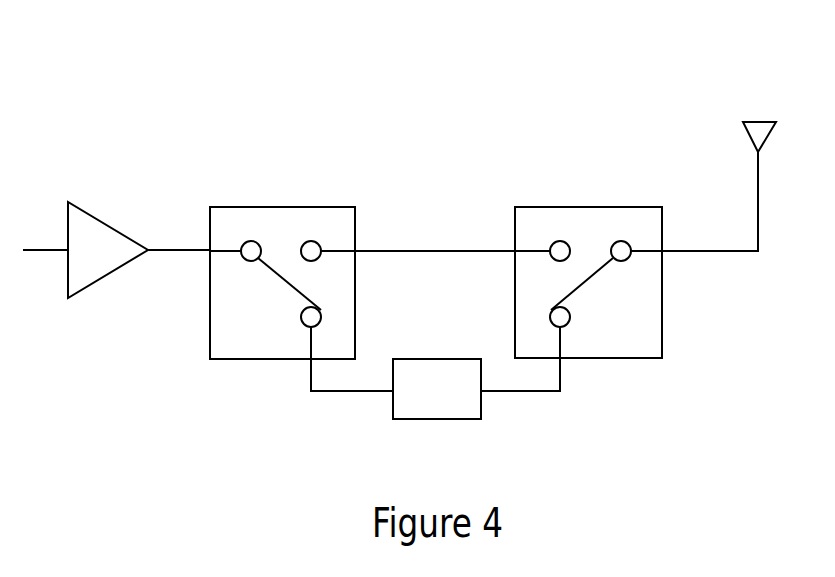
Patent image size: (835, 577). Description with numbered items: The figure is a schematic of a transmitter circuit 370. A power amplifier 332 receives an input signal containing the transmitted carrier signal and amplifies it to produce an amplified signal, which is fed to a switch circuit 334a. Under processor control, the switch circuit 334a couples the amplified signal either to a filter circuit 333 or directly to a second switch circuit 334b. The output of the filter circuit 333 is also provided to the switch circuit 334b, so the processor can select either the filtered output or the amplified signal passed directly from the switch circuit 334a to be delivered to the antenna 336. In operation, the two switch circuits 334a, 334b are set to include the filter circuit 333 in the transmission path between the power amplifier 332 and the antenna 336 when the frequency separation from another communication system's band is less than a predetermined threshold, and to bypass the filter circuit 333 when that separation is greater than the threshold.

The transmitter circuit 370 is at (470, 100).
The power amplifier 332 is at (98, 215).
The switch circuit 334a is at (283, 207).
The switch circuit 334b is at (587, 207).
The filter circuit 333 is at (444, 419).
The antenna 336 is at (749, 141).